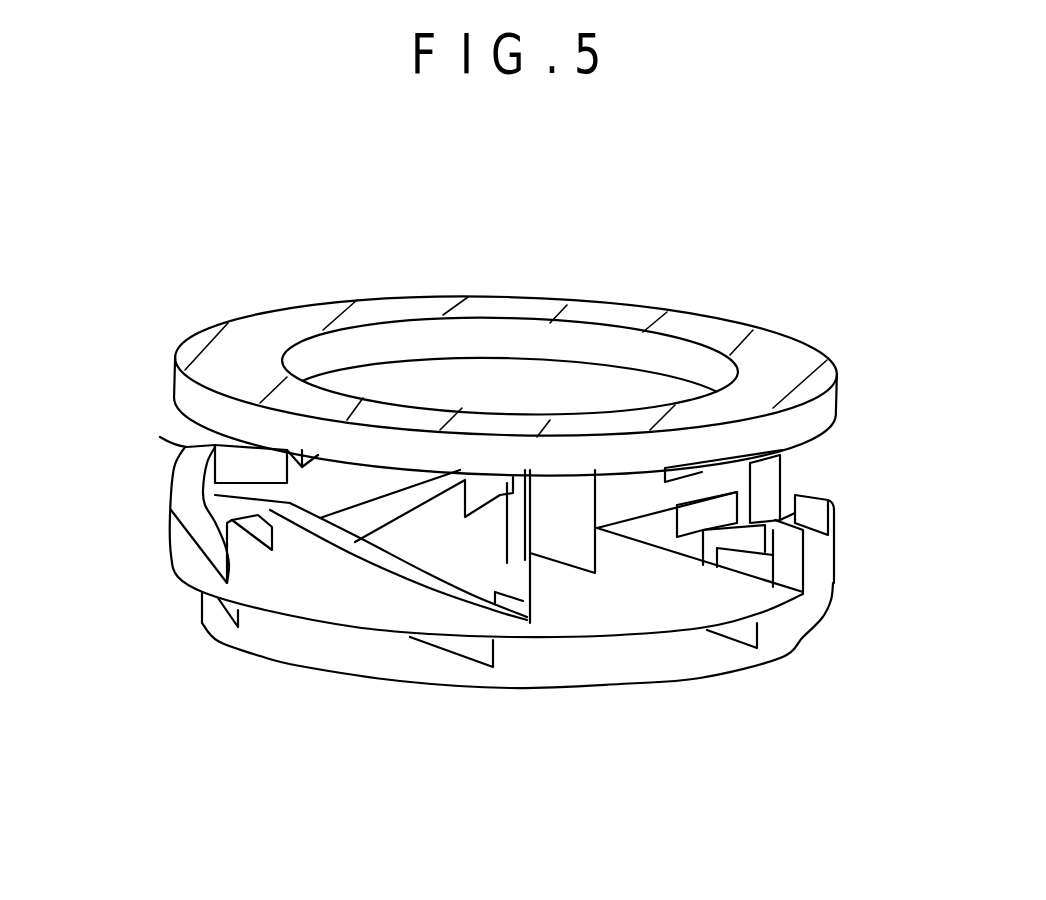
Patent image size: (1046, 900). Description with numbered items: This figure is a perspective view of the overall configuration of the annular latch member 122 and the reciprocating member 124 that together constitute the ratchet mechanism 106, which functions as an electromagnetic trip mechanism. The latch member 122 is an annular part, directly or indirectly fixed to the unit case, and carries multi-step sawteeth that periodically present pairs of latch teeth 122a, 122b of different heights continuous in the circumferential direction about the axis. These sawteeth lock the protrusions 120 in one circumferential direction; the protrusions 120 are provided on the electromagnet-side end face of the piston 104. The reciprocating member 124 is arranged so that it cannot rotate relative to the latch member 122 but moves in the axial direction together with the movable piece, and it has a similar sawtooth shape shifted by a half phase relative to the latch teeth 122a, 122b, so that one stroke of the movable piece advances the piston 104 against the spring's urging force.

The ratchet mechanism 106 is at (793, 326).
The piston 104 is at (190, 383).
The protrusion 120 is at (190, 432).
The latch member 122 is at (820, 570).
The latch tooth 122a is at (413, 590).
The latch tooth 122b is at (250, 536).
The reciprocating member 124 is at (782, 635).